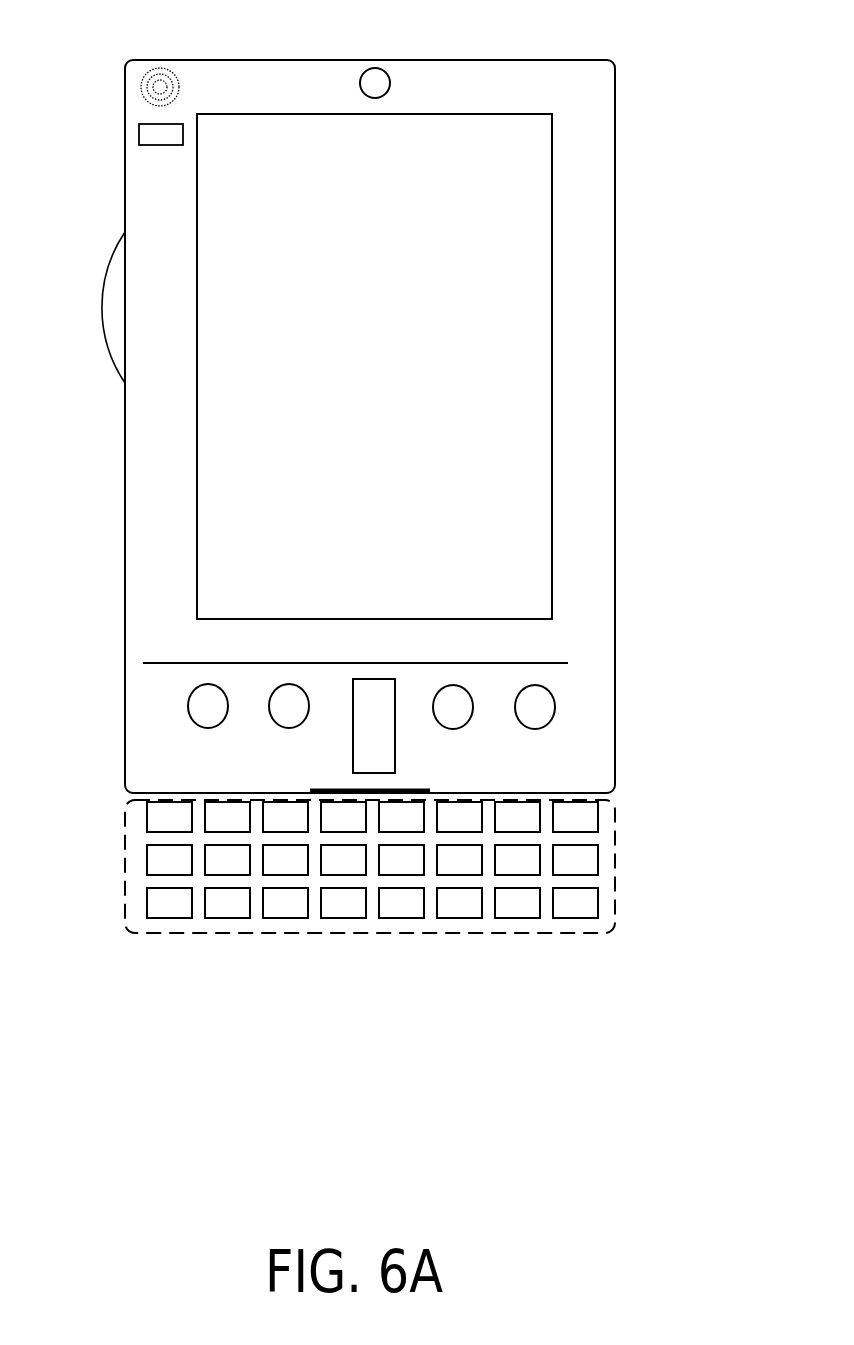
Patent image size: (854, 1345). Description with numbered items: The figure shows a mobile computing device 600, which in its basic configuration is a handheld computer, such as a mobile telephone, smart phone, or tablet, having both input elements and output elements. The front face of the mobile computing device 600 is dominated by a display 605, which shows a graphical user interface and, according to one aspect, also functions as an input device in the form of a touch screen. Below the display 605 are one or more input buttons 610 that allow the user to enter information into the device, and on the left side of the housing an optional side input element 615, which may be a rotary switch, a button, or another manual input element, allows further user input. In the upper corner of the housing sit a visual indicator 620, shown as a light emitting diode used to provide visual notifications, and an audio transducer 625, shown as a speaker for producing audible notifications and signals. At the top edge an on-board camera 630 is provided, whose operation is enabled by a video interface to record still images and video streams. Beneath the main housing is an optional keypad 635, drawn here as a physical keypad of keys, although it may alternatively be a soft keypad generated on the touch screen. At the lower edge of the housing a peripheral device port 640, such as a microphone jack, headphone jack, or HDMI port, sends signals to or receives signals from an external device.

The mobile computing device 600 is at (615, 88).
The display 605 is at (225, 458).
The input buttons 610 is at (353, 734).
The side input element 615 is at (102, 291).
The visual indicator 620 is at (139, 130).
The audio transducer 625 is at (141, 80).
The on-board camera 630 is at (366, 67).
The keypad 635 is at (137, 864).
The peripheral device port 640 is at (514, 771).